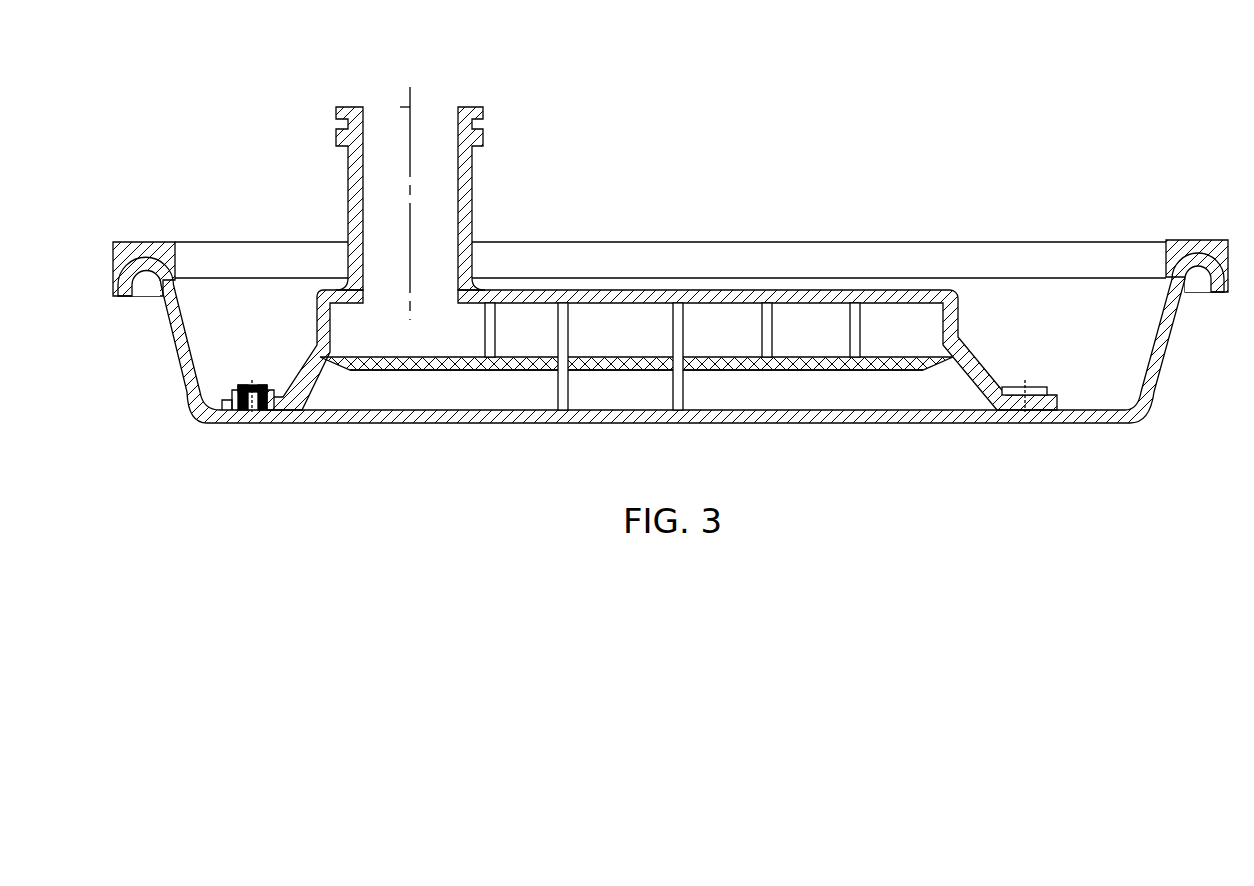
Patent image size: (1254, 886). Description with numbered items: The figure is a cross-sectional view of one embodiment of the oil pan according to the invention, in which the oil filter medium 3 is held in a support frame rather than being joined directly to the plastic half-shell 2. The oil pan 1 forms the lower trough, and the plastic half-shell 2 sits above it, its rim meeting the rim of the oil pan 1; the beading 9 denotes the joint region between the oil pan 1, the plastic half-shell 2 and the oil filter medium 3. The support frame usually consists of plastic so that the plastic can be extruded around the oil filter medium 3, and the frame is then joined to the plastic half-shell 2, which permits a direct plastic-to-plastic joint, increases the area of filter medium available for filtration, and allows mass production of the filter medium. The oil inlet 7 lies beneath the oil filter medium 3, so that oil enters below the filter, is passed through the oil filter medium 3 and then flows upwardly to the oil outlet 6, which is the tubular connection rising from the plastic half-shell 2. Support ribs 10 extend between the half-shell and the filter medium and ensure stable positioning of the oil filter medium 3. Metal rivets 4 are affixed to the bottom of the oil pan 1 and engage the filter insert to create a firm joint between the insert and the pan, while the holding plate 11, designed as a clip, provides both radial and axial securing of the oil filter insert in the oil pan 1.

The oil pan 1 is at (736, 424).
The plastic half-shell 2 is at (727, 290).
The oil filter medium 3 is at (820, 367).
The metal rivets 4 is at (252, 415).
The oil outlet 6 is at (437, 108).
The oil inlet 7 is at (950, 390).
The beading 9 is at (218, 409).
The support ribs 10 is at (567, 323).
The holding plate 11 is at (335, 360).